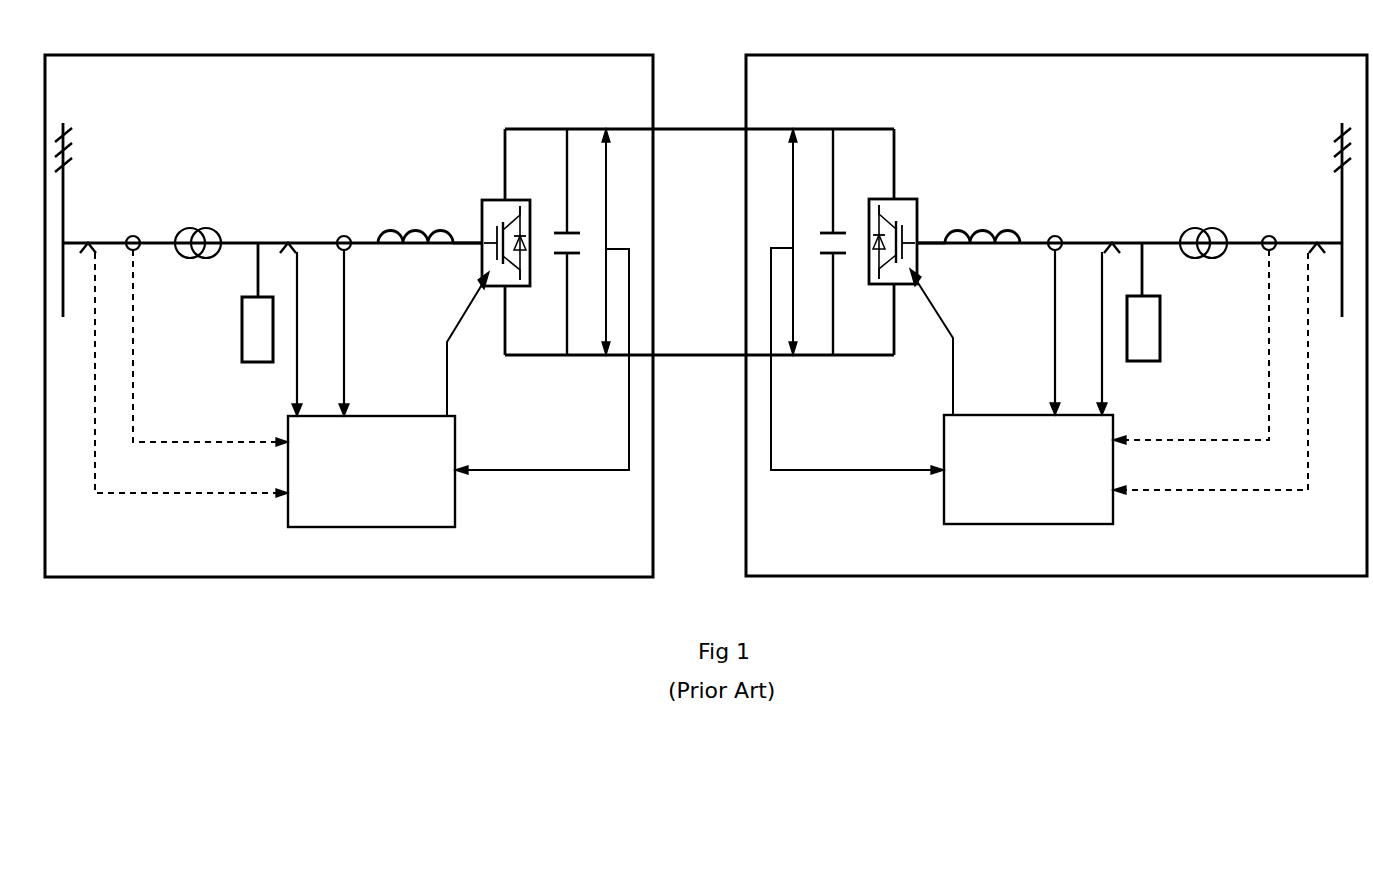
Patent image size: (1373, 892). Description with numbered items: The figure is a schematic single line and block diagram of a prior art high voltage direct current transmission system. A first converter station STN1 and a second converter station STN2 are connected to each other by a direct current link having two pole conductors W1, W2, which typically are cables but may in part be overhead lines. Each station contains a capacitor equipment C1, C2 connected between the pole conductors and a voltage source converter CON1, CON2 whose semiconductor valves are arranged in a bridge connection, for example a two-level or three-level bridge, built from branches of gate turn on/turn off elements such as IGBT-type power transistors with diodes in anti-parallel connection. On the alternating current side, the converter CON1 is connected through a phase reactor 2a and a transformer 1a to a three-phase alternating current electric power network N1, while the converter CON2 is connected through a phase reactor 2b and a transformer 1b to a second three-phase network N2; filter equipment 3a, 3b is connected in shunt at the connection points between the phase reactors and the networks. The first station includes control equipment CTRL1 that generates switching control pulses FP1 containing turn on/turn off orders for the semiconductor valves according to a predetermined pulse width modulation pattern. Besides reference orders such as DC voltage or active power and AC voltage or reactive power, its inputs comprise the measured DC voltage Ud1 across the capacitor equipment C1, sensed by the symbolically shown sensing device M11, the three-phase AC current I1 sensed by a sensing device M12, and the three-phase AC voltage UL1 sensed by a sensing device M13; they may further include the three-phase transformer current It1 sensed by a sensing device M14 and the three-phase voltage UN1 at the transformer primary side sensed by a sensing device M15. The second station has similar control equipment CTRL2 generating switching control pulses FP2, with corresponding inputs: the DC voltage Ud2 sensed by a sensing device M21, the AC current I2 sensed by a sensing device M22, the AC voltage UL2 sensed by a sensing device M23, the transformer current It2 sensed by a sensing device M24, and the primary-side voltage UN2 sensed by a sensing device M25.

The first converter station STN1 is at (168, 84).
The second converter station STN2 is at (1263, 82).
The three-phase alternating current electric power network N1 is at (64, 303).
The three-phase alternating current electric power network N2 is at (1341, 303).
The sensing device M15 is at (88, 242).
The sensing device M14 is at (133, 236).
The transformer 1a is at (206, 228).
The filter equipment 3a is at (242, 332).
The sensing device M13 is at (288, 242).
The three-phase AC voltage UL1 is at (318, 334).
The sensing device M12 is at (344, 236).
The three-phase AC current I1 is at (360, 333).
The phase reactor 2a is at (416, 230).
The voltage source converter CON1 is at (490, 200).
The capacitor equipment C1 is at (565, 232).
The pole conductor W1 is at (692, 131).
The pole conductor W2 is at (704, 354).
The sensing device M11 is at (606, 248).
The DC voltage Ud1 is at (542, 361).
The switching control pulse FP1 is at (471, 344).
The control equipment CTRL1 is at (408, 481).
The three-phase current in transformer It1 is at (210, 348).
The three-phase voltage at primary side of transformer UN1 is at (191, 375).
The sensing device M21 is at (790, 248).
The DC voltage Ud2 is at (857, 361).
The capacitor equipment C2 is at (840, 232).
The voltage source converter CON2 is at (905, 199).
The switching control pulse FP2 is at (929, 342).
The phase reactor 2b is at (983, 230).
The sensing device M22 is at (1055, 236).
The three-phase AC current I2 is at (1045, 332).
The sensing device M23 is at (1112, 242).
The three-phase AC voltage UL2 is at (1085, 333).
The filter equipment 3b is at (1160, 330).
The transformer 1b is at (1200, 228).
The sensing device M24 is at (1269, 236).
The three-phase current in transformer It2 is at (1191, 347).
The sensing device M25 is at (1317, 242).
The three-phase voltage at primary side of transformer UN2 is at (1210, 373).
The control equipment CTRL2 is at (1028, 469).